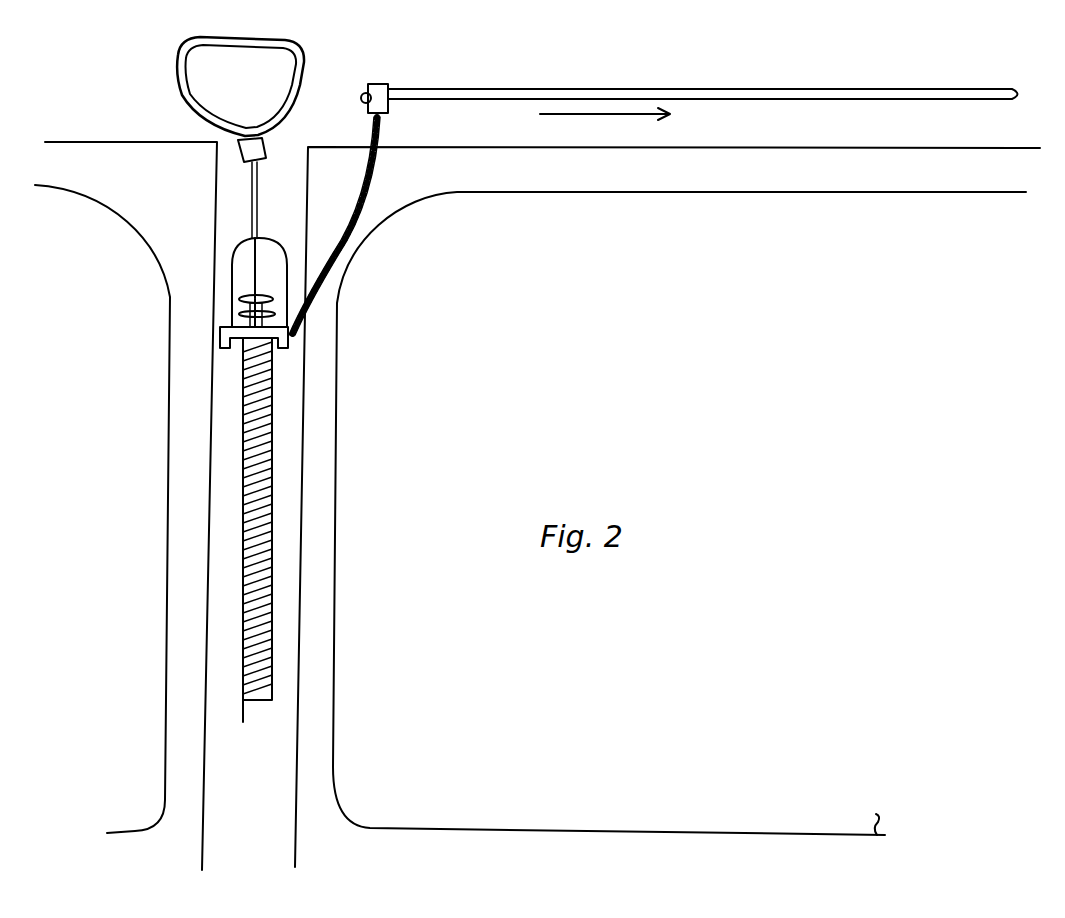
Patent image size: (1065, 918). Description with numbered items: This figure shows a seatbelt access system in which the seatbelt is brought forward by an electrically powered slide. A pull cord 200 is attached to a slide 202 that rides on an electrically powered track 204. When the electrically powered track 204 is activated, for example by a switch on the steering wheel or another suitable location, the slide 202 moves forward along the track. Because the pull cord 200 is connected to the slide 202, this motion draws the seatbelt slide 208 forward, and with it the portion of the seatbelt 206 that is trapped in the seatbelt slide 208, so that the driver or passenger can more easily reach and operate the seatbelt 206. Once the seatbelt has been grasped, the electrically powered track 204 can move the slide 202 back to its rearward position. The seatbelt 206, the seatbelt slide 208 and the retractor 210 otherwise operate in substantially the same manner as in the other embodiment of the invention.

The pull cord 200 is at (332, 253).
The slide 202 is at (385, 107).
The electrically powered track 204 is at (694, 97).
The seatbelt 206 is at (272, 367).
The seatbelt slide 208 is at (228, 338).
The retractor 210 is at (240, 99).